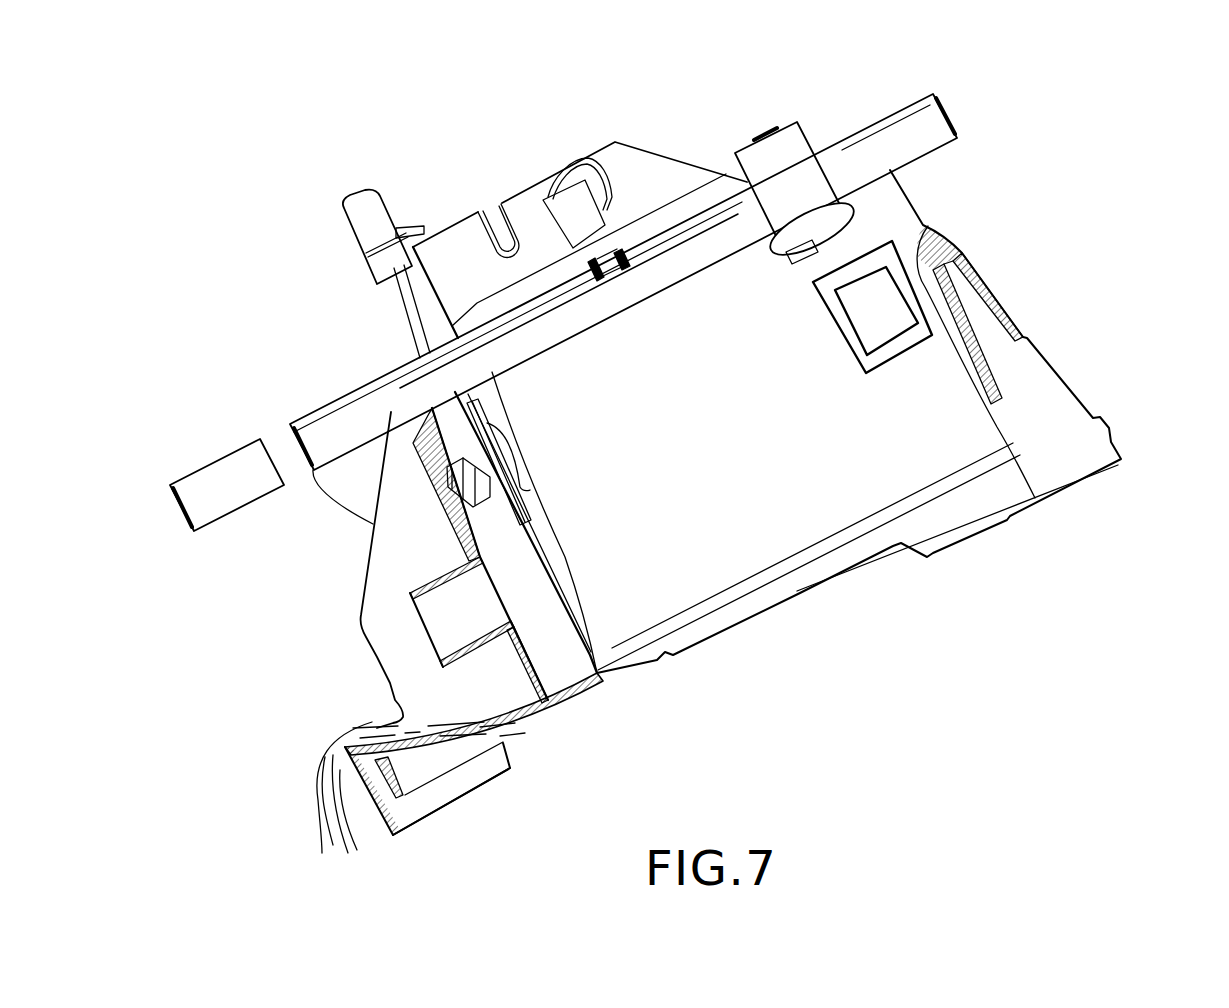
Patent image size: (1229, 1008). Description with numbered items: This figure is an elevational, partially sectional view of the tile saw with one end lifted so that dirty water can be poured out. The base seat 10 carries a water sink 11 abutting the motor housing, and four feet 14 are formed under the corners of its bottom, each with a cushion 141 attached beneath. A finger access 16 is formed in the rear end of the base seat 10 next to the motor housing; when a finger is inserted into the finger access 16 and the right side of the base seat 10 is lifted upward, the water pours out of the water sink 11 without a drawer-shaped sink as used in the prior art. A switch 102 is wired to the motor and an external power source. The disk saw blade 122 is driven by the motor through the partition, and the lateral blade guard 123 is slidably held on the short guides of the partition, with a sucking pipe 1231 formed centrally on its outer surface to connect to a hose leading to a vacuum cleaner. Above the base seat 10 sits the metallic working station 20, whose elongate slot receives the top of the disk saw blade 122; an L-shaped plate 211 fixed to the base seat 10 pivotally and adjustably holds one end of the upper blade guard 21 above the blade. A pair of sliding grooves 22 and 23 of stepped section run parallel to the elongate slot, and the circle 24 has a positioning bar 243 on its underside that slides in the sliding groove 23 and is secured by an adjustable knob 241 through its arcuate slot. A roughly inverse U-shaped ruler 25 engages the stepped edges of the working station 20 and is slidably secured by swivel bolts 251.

The base seat 10 is at (1085, 356).
The water sink 11 is at (424, 683).
The feet 14 is at (489, 760).
The cushion 141 is at (437, 813).
The finger access 16 is at (975, 318).
The switch 102 is at (877, 290).
The working station 20 is at (966, 126).
The upper blade guard 21 is at (364, 206).
The L-shaped plate 211 is at (408, 307).
The sliding groove 22 is at (279, 437).
The sliding groove 23 is at (593, 280).
The circle 24 is at (640, 172).
The adjustable knob 241 is at (563, 200).
The positioning bar 243 is at (618, 275).
The ruler 25 is at (792, 146).
The swivel bolt 251 is at (781, 245).
The disk saw blade 122 is at (560, 586).
The lateral blade guard 123 is at (455, 513).
The sucking pipe 1231 is at (405, 598).